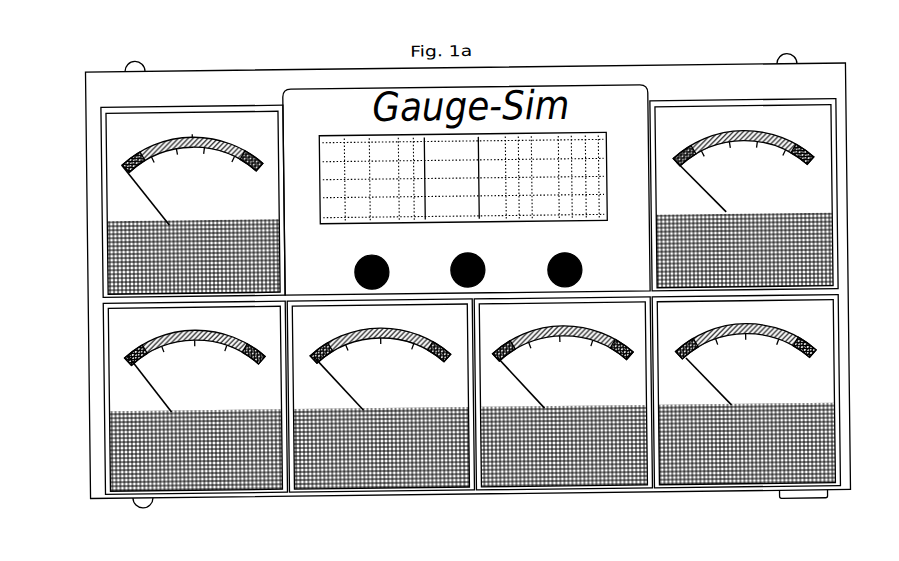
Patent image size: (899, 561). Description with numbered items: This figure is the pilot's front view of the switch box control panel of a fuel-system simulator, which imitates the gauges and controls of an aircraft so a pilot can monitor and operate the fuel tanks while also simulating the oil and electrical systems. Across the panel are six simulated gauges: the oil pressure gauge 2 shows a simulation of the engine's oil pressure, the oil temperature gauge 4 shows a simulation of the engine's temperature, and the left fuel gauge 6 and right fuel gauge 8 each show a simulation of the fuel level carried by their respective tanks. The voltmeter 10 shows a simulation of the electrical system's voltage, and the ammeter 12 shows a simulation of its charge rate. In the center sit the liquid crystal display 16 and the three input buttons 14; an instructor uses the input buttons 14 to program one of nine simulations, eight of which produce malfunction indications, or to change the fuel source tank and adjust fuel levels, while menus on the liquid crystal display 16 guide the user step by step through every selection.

The oil pressure gauge 2 is at (240, 132).
The oil temperature gauge 4 is at (221, 372).
The left fuel gauge 6 is at (412, 374).
The right fuel gauge 8 is at (582, 374).
The voltmeter 10 is at (694, 131).
The ammeter 12 is at (776, 376).
The input buttons 14 is at (552, 251).
The liquid crystal display 16 is at (582, 136).